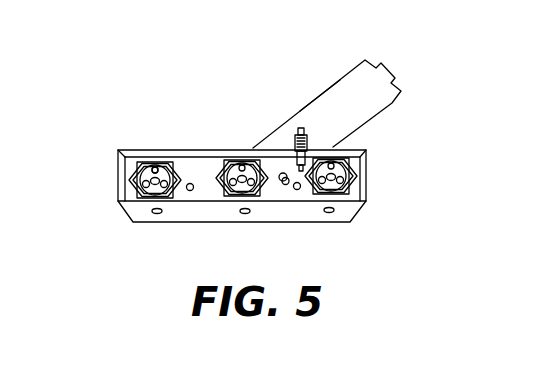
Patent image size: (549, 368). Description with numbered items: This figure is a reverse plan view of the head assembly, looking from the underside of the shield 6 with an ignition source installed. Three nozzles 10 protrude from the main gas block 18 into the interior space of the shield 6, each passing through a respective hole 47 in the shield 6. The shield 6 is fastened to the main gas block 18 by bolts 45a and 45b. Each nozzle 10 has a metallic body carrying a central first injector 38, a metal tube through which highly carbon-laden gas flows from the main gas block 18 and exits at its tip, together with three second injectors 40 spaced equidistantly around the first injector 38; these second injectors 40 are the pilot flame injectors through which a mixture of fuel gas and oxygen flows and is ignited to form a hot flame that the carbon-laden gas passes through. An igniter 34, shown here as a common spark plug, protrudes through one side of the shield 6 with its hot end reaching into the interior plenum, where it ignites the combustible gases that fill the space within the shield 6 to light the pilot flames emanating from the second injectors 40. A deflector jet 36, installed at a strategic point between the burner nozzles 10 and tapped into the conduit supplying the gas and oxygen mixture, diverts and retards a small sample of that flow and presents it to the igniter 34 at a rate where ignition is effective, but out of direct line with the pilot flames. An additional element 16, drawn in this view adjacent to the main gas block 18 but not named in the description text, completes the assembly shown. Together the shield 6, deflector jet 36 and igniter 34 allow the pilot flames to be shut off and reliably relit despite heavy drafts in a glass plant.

The shield 6 is at (122, 211).
The nozzle 10 is at (172, 174).
The flashlight 16 is at (365, 60).
The main gas block 18 is at (334, 86).
The igniter 34 is at (292, 141).
The deflector jet 36 is at (281, 184).
The first injector 38 is at (139, 162).
The second injector 40 is at (155, 167).
The bolt 45a is at (190, 191).
The bolt 45b is at (297, 190).
The hole 47 is at (172, 174).